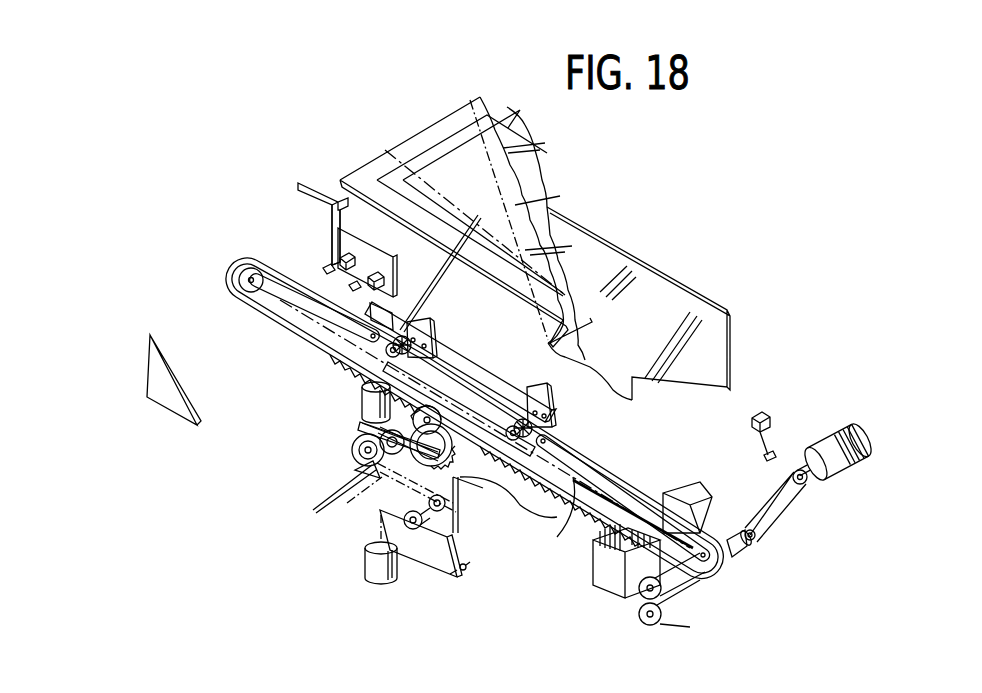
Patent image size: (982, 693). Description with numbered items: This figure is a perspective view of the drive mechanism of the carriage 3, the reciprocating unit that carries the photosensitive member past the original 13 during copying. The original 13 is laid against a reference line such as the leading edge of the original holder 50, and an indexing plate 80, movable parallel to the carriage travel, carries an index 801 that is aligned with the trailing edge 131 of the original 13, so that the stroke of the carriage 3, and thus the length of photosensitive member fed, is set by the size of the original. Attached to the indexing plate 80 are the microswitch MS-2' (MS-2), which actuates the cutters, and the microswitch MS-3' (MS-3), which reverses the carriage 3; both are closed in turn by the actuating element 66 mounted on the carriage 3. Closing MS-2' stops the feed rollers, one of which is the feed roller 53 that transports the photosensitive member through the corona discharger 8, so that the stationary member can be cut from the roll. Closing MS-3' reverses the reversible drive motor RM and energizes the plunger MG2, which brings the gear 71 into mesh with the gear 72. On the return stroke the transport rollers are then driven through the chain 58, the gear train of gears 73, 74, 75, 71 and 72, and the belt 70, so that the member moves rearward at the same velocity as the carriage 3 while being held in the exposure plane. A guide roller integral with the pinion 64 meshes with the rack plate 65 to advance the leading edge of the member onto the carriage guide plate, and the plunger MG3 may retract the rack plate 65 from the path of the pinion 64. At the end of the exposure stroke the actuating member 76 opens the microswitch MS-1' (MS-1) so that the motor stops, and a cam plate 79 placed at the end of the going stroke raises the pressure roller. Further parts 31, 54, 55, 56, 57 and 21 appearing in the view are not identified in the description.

The trailing edge of the original 131 is at (466, 206).
The original 13 is at (470, 122).
The original holder 50 is at (437, 170).
The carriage 3 is at (667, 290).
The index 801 is at (335, 186).
The indexing plate 80 is at (333, 238).
The microswitch MS-3' is at (306, 254).
The microswitch MS-3 is at (306, 254).
The microswitch MS-2' is at (387, 243).
The microswitch MS-2 is at (387, 243).
The switch mounting plate and roller 55 is at (387, 347).
The actuating element 66 is at (424, 324).
The guide rail 31 is at (467, 368).
The drive belt 57 is at (240, 263).
The chain 58 is at (613, 477).
The actuating member 76 is at (550, 375).
The guide roller 54 is at (515, 428).
The plunger MG2 is at (363, 403).
The gear 75 is at (407, 410).
The gear 73 is at (437, 407).
The gear 74 is at (449, 452).
The gear 71 is at (380, 423).
The gear 72 is at (357, 443).
The belt 70 is at (380, 487).
The plunger MG3 is at (365, 565).
The pinion 64 is at (417, 533).
The rack plate 65 is at (460, 540).
The connecting cable 21 is at (573, 513).
The corona discharger 8 is at (603, 585).
The feed roller 53 is at (650, 620).
The drive pulley 56 is at (720, 567).
The reversible drive motor RM is at (837, 437).
The microswitch MS-1' is at (733, 436).
The microswitch MS-1 is at (733, 436).
The cam plate 79 is at (170, 393).